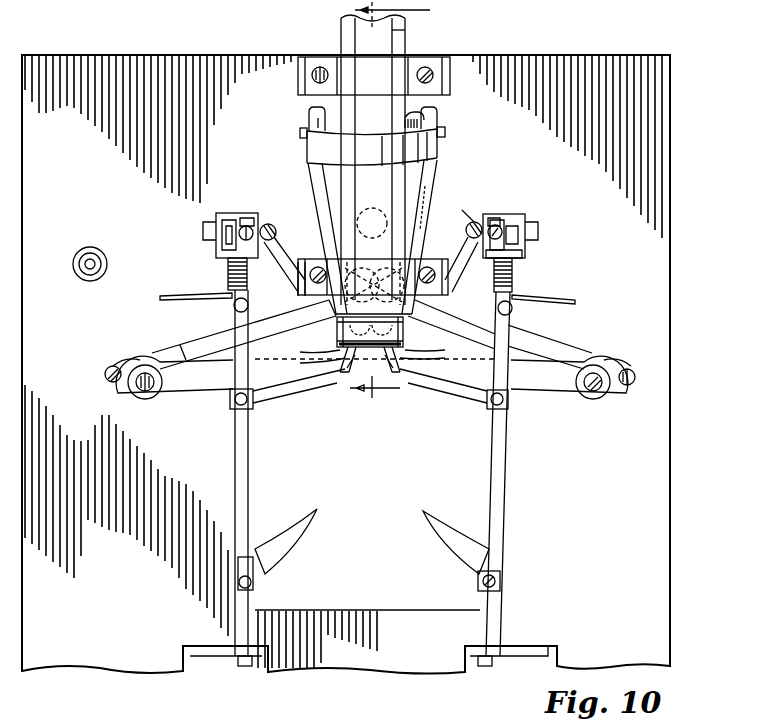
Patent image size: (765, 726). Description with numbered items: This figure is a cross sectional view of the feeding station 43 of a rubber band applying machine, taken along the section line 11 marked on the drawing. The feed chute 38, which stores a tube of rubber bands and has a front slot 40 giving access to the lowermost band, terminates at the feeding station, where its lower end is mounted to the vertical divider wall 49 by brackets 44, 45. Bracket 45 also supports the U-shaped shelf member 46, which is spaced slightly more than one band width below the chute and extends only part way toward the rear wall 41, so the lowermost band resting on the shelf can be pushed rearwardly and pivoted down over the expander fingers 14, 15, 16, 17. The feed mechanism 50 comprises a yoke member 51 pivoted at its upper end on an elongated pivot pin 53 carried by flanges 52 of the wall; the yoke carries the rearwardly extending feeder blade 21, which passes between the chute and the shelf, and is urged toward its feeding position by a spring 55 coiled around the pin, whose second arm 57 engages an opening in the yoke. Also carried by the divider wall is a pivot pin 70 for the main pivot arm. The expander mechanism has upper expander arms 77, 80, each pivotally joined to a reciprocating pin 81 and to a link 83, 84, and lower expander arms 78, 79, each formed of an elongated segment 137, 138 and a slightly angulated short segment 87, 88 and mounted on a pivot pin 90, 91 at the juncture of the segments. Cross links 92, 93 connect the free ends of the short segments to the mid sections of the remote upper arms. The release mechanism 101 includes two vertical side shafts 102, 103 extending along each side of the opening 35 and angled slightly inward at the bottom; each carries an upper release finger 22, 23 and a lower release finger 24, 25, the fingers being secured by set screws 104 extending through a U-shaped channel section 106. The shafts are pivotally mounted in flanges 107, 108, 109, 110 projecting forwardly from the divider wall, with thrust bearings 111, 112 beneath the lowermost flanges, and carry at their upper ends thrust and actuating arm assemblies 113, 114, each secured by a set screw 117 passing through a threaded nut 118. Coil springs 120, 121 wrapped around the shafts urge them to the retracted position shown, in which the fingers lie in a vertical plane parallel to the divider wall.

The section line 11- 11 is at (390, 206).
The expander finger 14 is at (405, 349).
The expander finger 15 is at (415, 379).
The expander finger 16 is at (360, 388).
The expander finger 17 is at (338, 350).
The feeder blade 21 is at (405, 332).
The upper release finger 22 is at (473, 380).
The upper release finger 23 is at (272, 389).
The lower release finger 24 is at (428, 514).
The lower release finger 25 is at (317, 512).
The opening 35 is at (367, 558).
The feed chute 38 is at (398, 32).
The front slot 40 is at (398, 47).
The rear wall 41 is at (373, 160).
The feeding station 43 is at (305, 312).
The bracket 44 is at (343, 67).
The bracket 45 is at (448, 287).
The shelf member 46 is at (348, 369).
The divider wall 49 is at (670, 381).
The feed mechanism 50 is at (302, 197).
The yoke member 51 is at (435, 183).
The flanges 52 is at (322, 127).
The pivot pin 53 is at (322, 130).
The spring 55 is at (407, 116).
The second arm of spring 57 is at (425, 192).
The pivot pin 70 is at (85, 279).
The upper expander arm 77 is at (465, 240).
The lower expander arm 78 is at (548, 384).
The lower expander arm 79 is at (203, 380).
The upper expander arm 80 is at (325, 237).
The reciprocating pin 81 is at (386, 208).
The link 83 is at (478, 225).
The link 84 is at (270, 224).
The short segment 87 is at (617, 390).
The short segment 88 is at (127, 390).
The pivot pin 90 is at (598, 390).
The pivot pin 91 is at (148, 392).
The cross link 92 is at (537, 340).
The cross link 93 is at (210, 339).
The release mechanism 101 is at (258, 463).
The vertical side shaft 102 is at (505, 531).
The vertical side shaft 103 is at (255, 496).
The set screw 104 is at (478, 577).
The U-shaped channel section 106 is at (500, 585).
The flange 107 is at (523, 258).
The flange 108 is at (222, 260).
The flange 109 is at (523, 647).
The flange 110 is at (205, 649).
The thrust bearing 111 is at (473, 667).
The thrust bearing 112 is at (245, 668).
The thrust and actuating arm assembly 113 is at (525, 218).
The thrust and actuating arm assembly 114 is at (227, 213).
The set screw 117 is at (510, 215).
The threaded nut 118 is at (530, 238).
The coil spring 120 is at (520, 281).
The coil spring 121 is at (230, 287).
The elongated segment 137 is at (482, 342).
The elongated segment 138 is at (268, 359).